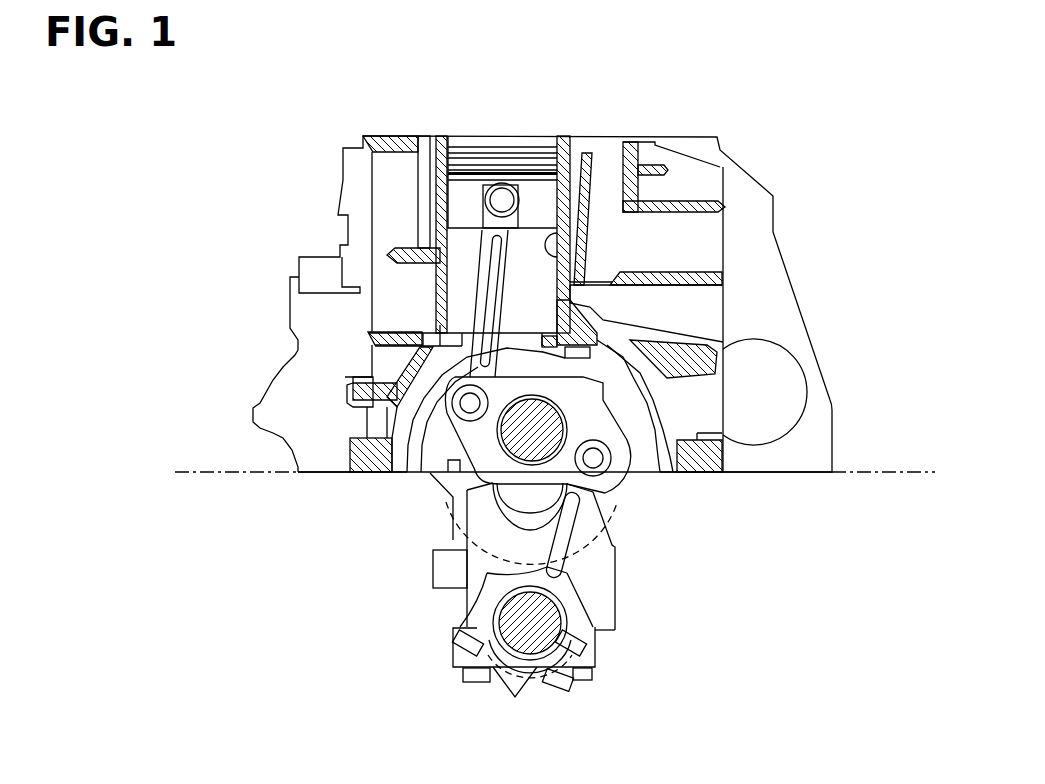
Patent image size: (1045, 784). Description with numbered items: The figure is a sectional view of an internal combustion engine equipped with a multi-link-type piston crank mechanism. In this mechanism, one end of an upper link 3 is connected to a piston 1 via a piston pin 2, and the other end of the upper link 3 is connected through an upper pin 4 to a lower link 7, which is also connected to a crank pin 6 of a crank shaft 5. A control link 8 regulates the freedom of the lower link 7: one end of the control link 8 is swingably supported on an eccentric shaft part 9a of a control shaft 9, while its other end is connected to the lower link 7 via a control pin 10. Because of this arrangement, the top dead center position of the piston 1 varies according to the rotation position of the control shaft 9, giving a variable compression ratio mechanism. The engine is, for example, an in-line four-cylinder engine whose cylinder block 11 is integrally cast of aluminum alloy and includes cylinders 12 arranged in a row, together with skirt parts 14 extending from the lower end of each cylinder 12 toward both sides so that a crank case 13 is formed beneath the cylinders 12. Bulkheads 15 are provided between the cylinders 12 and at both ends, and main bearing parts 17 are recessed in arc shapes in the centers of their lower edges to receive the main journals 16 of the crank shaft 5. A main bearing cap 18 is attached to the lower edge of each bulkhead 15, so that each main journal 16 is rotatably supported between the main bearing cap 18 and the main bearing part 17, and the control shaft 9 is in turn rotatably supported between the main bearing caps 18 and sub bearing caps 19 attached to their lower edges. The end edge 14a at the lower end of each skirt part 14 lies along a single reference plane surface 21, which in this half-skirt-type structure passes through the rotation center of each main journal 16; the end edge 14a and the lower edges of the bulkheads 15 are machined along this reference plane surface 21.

The piston 1 is at (530, 152).
The piston pin 2 is at (500, 196).
The upper link 3 is at (497, 257).
The upper pin 4 is at (427, 392).
The crank shaft 5 is at (460, 527).
The crank pin 6 is at (495, 456).
The lower link 7 is at (583, 417).
The control link 8 is at (570, 558).
The control shaft 9 is at (592, 678).
The eccentric shaft part 9a is at (553, 628).
The control pin 10 is at (612, 477).
The cylinder block 11 is at (710, 270).
The cylinder 12 is at (553, 256).
The crank case 13 is at (650, 458).
The skirt part 14 is at (677, 413).
The end edge 14a is at (367, 473).
The bulkhead 15 is at (423, 423).
The main journal 16 is at (555, 492).
The main bearing part 17 is at (495, 465).
The main bearing cap 18 is at (605, 605).
The sub bearing cap 19 is at (460, 660).
The reference plane surface 21 is at (888, 477).